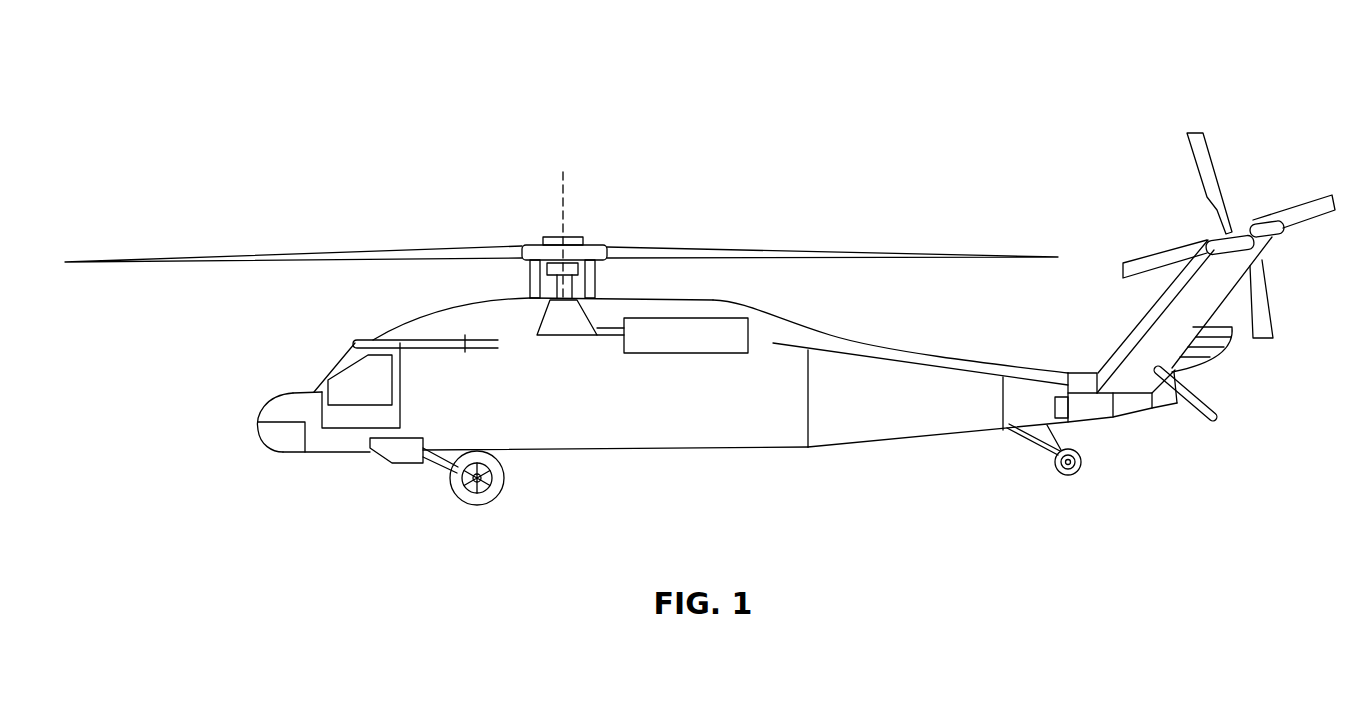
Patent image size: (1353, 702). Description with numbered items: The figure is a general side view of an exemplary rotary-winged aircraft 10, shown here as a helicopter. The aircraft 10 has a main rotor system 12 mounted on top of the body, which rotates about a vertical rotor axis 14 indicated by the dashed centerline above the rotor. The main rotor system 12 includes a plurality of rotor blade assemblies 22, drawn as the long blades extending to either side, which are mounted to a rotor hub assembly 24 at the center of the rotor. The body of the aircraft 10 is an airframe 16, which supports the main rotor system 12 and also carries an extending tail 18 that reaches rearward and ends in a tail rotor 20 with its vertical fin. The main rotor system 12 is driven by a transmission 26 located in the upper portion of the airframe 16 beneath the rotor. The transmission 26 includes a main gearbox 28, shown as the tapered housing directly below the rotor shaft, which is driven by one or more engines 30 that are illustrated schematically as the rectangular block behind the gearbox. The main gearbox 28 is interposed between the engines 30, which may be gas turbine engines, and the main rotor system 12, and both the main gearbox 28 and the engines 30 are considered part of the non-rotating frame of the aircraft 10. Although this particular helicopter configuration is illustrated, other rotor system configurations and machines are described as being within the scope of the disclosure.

The rotary-winged aircraft 10 is at (234, 99).
The main rotor system 12 is at (542, 247).
The rotor axis 14 is at (565, 180).
The airframe 16 is at (632, 427).
The extending tail 18 is at (1095, 405).
The tail rotor 20 is at (1203, 168).
The rotor blade assemblies 22 is at (245, 255).
The rotor hub assembly 24 is at (540, 240).
The transmission 26 is at (655, 298).
The main gearbox 28 is at (567, 325).
The engines 30 is at (685, 337).